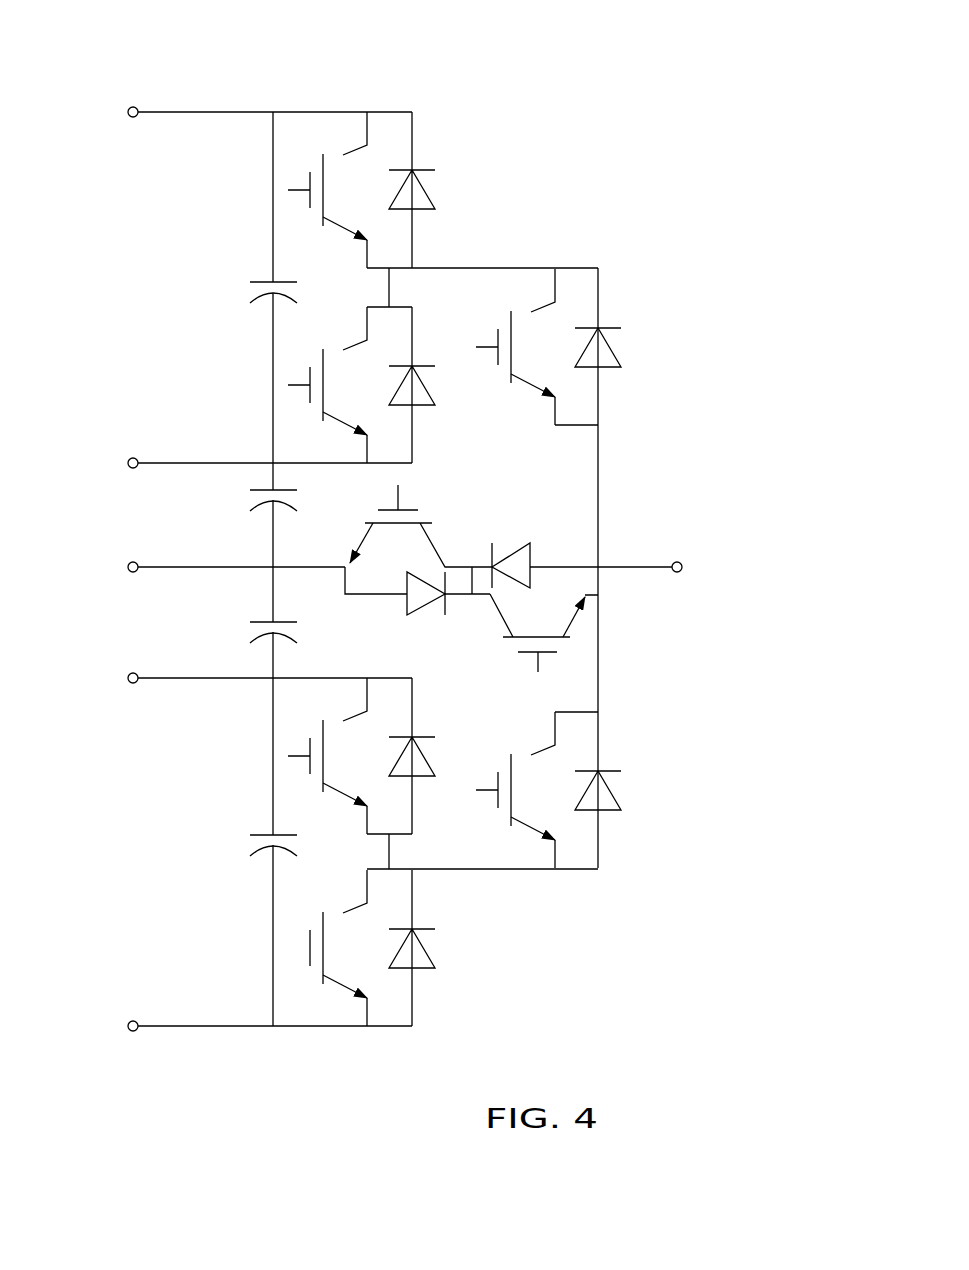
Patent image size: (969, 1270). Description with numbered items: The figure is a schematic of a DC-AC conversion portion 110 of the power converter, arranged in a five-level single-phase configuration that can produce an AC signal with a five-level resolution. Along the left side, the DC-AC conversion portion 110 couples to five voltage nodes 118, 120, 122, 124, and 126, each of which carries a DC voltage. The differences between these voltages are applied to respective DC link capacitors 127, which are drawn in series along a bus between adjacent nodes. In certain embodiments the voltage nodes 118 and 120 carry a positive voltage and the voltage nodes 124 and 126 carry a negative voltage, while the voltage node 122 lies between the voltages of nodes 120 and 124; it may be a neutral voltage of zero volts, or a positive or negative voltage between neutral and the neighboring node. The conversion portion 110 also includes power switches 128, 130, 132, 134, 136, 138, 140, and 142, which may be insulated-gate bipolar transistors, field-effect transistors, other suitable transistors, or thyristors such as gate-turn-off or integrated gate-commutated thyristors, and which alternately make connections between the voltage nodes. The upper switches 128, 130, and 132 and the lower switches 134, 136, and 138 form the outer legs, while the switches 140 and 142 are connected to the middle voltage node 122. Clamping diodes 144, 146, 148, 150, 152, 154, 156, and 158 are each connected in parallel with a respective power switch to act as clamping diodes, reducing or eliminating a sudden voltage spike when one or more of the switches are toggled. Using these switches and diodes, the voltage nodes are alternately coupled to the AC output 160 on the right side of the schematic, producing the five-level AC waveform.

The DC-AC conversion portion 110 is at (548, 36).
The voltage node 118 is at (128, 107).
The voltage node 120 is at (128, 458).
The voltage node 122 is at (128, 562).
The voltage node 124 is at (128, 673).
The voltage node 126 is at (128, 1021).
The DC link capacitors 127 is at (262, 281).
The power switch 128 is at (344, 150).
The power switch 130 is at (345, 345).
The power switch 132 is at (523, 383).
The power switch 134 is at (533, 750).
The power switch 136 is at (347, 792).
The power switch 138 is at (345, 983).
The power switch 140 is at (433, 544).
The power switch 142 is at (575, 621).
The clamping diode 144 is at (423, 188).
The clamping diode 146 is at (422, 383).
The clamping diode 148 is at (613, 347).
The clamping diode 150 is at (613, 790).
The clamping diode 152 is at (425, 757).
The clamping diode 154 is at (430, 948).
The clamping diode 156 is at (425, 603).
The clamping diode 158 is at (508, 552).
The AC output 160 is at (682, 561).